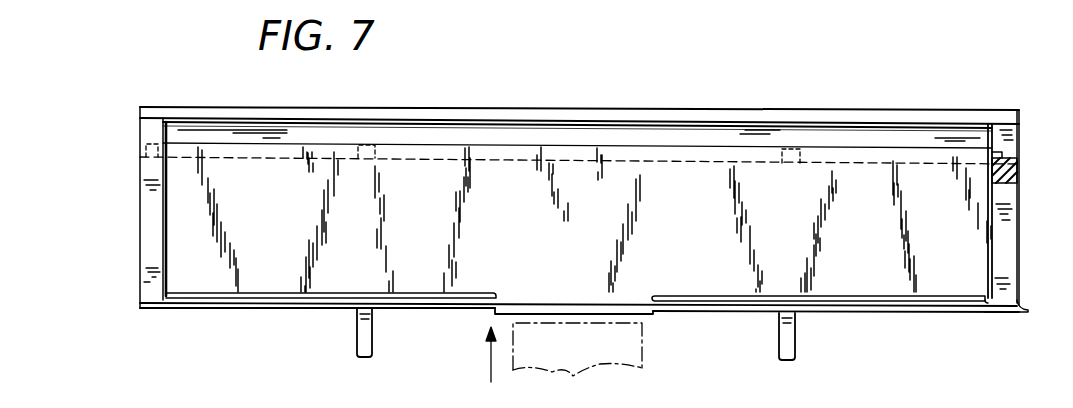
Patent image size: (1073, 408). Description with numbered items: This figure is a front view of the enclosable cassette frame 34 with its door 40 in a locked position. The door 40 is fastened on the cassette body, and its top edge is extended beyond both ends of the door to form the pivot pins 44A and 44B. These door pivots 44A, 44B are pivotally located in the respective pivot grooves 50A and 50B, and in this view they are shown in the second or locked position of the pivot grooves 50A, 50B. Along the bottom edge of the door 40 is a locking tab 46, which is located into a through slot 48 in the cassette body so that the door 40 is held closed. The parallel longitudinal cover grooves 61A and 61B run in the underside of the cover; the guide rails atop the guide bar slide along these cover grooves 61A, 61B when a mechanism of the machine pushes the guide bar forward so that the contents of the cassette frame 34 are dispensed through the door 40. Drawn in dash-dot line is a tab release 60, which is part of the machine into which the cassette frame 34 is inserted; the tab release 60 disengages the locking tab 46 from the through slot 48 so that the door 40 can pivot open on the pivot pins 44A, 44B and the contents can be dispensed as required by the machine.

The enclosable cassette frame 34 is at (585, 104).
The pivot groove 50A is at (152, 128).
The pivot groove 50B is at (1019, 123).
The pivot pin 44A is at (142, 156).
The pivot pin 44B is at (1008, 151).
The cover groove 61A is at (380, 141).
The cover groove 61B is at (797, 148).
The locking tab 46 is at (634, 316).
The through slot 48 is at (655, 312).
The door 40 is at (974, 305).
The tab release 60 is at (575, 380).